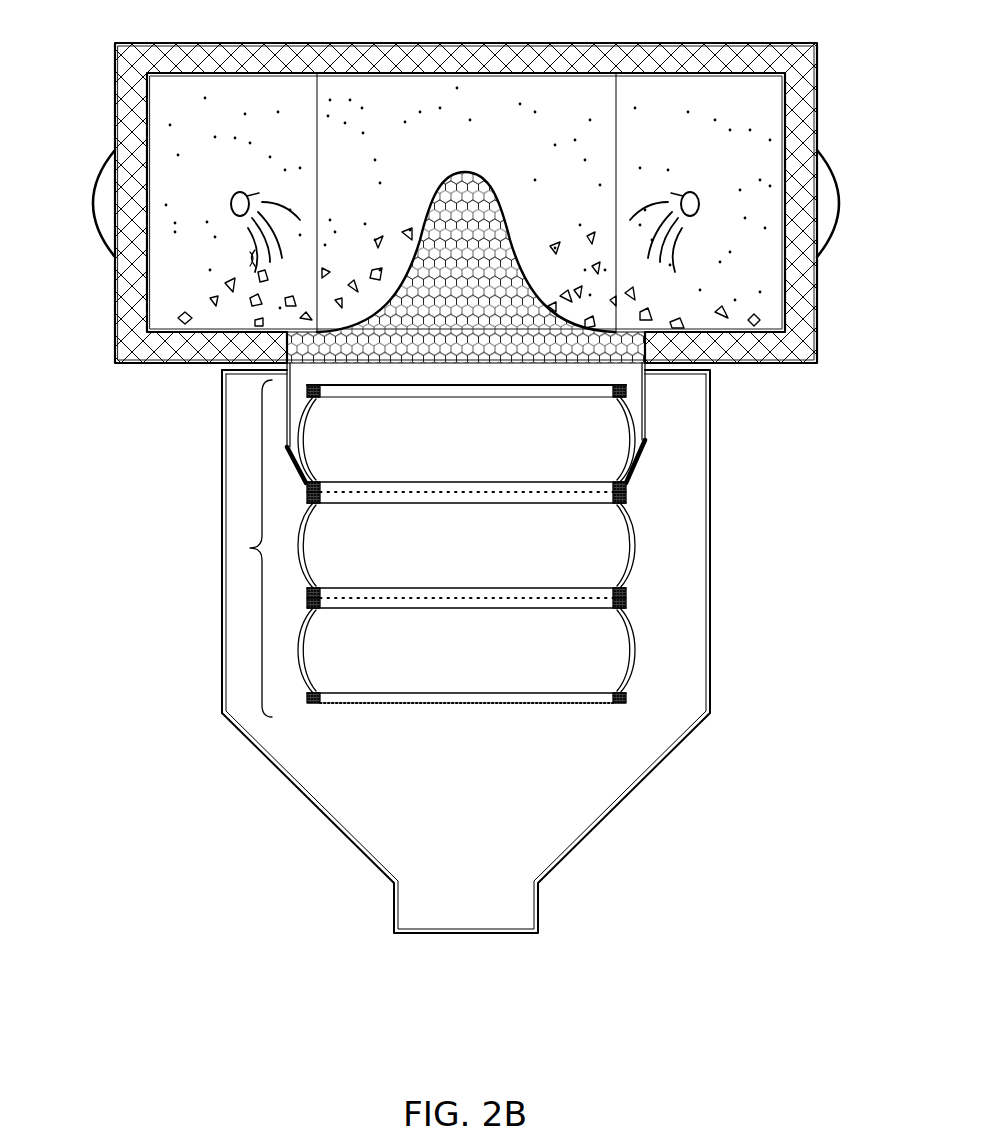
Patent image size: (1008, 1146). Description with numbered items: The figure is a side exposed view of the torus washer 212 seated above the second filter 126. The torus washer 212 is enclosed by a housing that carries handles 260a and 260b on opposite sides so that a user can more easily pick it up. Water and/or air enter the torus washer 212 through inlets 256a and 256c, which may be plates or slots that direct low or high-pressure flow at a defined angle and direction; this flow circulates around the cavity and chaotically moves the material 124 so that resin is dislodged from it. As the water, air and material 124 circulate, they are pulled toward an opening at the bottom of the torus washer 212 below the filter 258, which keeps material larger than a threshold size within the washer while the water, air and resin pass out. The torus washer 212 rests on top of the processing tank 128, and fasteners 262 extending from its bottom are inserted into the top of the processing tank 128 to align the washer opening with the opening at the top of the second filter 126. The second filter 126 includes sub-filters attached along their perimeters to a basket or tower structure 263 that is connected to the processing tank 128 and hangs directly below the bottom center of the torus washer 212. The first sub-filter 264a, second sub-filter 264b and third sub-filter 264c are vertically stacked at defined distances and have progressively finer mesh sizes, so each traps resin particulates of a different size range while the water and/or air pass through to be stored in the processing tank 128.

The torus washer 212 is at (464, 40).
The handle 260a is at (90, 223).
The handle 260b is at (840, 223).
The inlet 256a is at (230, 195).
The inlet 256c is at (701, 195).
The filter 258 is at (482, 202).
The material 124 is at (651, 287).
The second filter 126 is at (636, 721).
The processing tank 128 is at (220, 717).
The fasteners 262 is at (652, 434).
The basket or tower structure 263 is at (250, 548).
The first sub-filter 264a is at (466, 499).
The second sub-filter 264b is at (466, 604).
The third sub-filter 264c is at (466, 710).